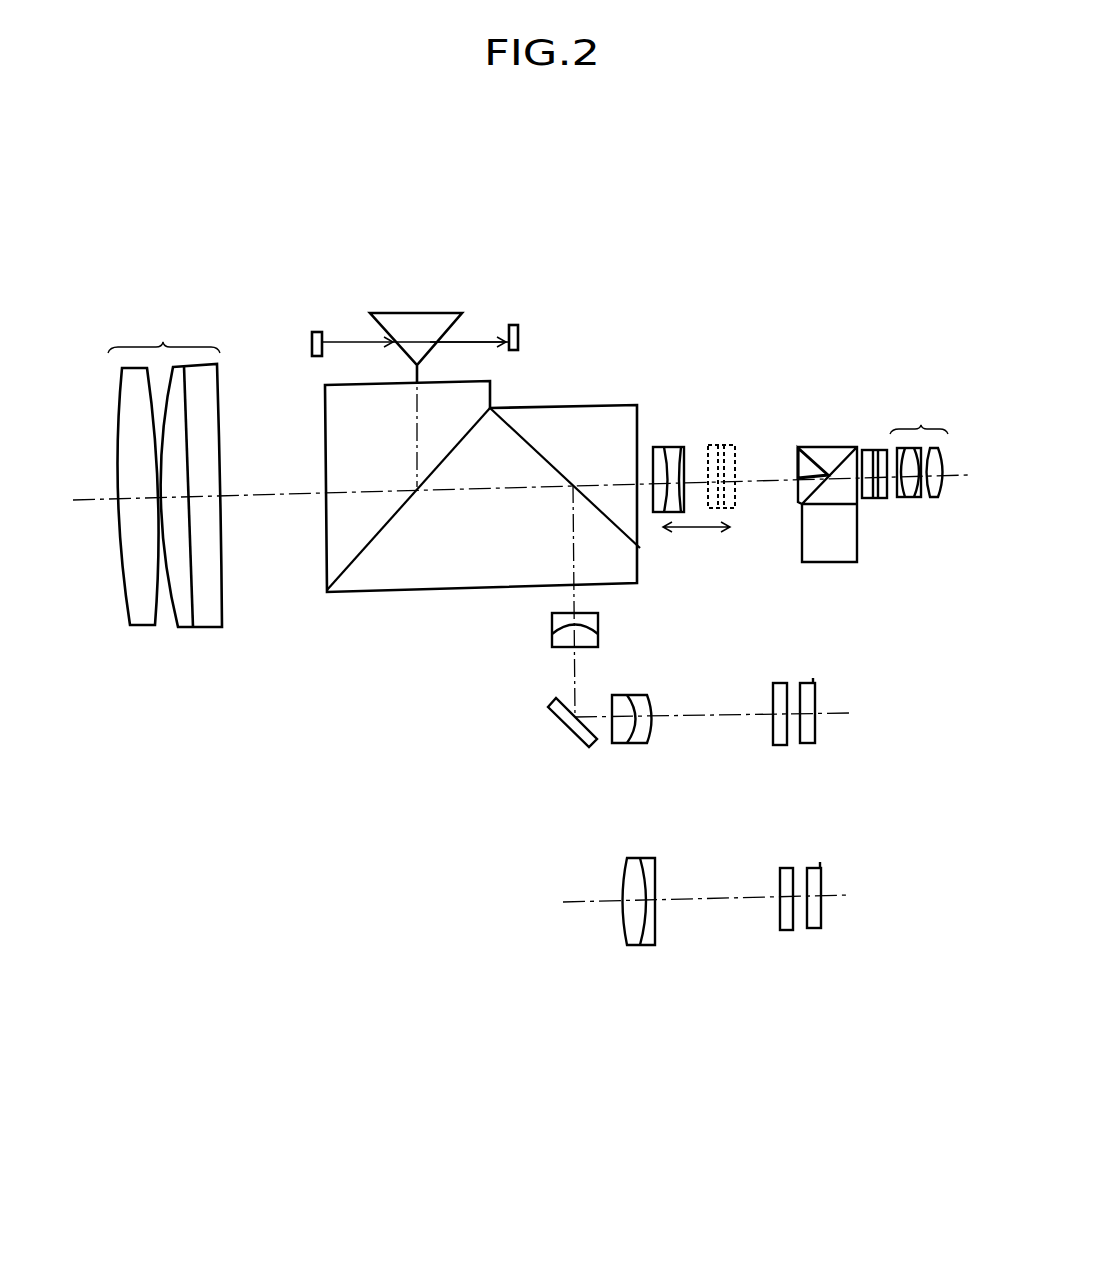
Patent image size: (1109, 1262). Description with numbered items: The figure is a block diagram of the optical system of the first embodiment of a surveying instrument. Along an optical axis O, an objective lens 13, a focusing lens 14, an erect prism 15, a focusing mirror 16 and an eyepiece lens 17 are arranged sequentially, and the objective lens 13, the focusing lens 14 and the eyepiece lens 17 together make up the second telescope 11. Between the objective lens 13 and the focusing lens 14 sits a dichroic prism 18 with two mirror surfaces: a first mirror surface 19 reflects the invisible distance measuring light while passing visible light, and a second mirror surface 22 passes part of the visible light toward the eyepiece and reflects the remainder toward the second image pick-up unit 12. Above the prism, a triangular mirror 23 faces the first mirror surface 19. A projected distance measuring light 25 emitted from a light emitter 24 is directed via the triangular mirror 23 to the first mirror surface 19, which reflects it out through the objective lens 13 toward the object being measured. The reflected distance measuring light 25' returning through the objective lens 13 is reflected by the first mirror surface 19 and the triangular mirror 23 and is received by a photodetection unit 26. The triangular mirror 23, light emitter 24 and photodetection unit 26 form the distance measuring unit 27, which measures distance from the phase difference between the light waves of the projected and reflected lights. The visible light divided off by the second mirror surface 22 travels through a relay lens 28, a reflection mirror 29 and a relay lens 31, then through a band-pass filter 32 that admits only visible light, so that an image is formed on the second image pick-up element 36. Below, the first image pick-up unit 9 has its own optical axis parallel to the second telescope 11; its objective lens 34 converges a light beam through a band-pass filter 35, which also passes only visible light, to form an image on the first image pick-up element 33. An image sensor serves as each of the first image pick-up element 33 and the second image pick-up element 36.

The first image pick-up unit 9 is at (670, 988).
The second telescope 11 is at (268, 298).
The second image pick-up unit 12 is at (822, 758).
The objective lens 13 is at (163, 346).
The focusing lens 14 is at (663, 447).
The erect prism 15 is at (813, 450).
The focusing mirror 16 is at (875, 498).
The eyepiece lens 17 is at (920, 430).
The dichroic prism 18 is at (425, 592).
The first mirror surface 19 is at (388, 522).
The second mirror surface 22 is at (540, 452).
The triangular mirror 23 is at (428, 313).
The light emitter 24 is at (316, 332).
The projected distance measuring light 25 is at (415, 288).
The reflected distance measuring light 25' is at (505, 286).
The photodetection unit 26 is at (516, 325).
The distance measuring unit 27 is at (424, 252).
The relay lens 28 is at (600, 628).
The reflection mirror 29 is at (558, 720).
The relay lens 31 is at (633, 745).
The band-pass filter 32 is at (783, 745).
The first image pick-up element 33 is at (812, 930).
The objective lens 34 is at (628, 945).
The band-pass filter 35 is at (783, 930).
The second image pick-up element 36 is at (815, 702).
The optical axis O is at (752, 478).